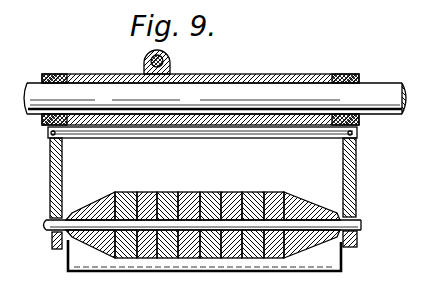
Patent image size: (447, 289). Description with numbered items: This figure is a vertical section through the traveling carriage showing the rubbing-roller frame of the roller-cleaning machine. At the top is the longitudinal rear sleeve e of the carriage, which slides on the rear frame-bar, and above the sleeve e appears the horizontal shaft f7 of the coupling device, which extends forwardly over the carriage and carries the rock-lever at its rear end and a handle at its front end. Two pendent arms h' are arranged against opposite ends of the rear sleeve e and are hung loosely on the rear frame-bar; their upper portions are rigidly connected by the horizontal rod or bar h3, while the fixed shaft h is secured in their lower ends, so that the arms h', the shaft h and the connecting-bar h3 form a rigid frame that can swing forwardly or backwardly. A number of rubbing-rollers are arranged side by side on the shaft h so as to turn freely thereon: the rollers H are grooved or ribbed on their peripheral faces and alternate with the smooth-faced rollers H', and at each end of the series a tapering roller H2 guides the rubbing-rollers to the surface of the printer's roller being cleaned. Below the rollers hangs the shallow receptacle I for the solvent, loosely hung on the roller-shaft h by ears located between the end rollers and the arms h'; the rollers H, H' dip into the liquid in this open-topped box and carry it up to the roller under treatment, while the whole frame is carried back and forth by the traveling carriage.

The shaft d' is at (215, 80).
The rear sleeve e is at (200, 88).
The horizontal shaft f7 is at (143, 64).
The horizontal rod or bar h3 is at (177, 136).
The pendent arms h' is at (202, 178).
The fixed shaft h is at (217, 232).
The tapering roller H2 is at (203, 218).
The grooved rubbing-rollers H is at (199, 197).
The smooth-faced rubbing-rollers H' is at (199, 259).
The receptacle I is at (204, 264).